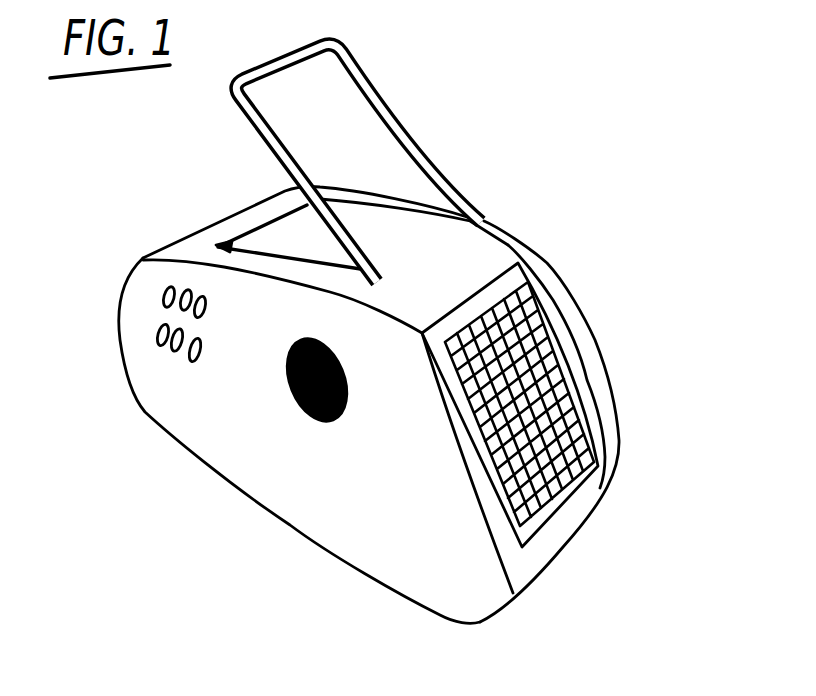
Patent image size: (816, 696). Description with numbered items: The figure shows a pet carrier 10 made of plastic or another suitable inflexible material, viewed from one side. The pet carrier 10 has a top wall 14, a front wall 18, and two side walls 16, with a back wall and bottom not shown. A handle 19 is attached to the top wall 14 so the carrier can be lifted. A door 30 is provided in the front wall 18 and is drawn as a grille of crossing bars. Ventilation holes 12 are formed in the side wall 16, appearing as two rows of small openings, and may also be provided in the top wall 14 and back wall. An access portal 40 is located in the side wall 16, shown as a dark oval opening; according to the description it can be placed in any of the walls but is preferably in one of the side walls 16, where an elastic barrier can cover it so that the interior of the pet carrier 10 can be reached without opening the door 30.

The pet carrier 10 is at (547, 211).
The ventilation holes 12 is at (170, 356).
The top wall 14 is at (392, 250).
The side wall 16 is at (390, 522).
The front wall 18 is at (600, 350).
The handle 19 is at (385, 89).
The door 30 is at (469, 355).
The access portal 40 is at (296, 403).